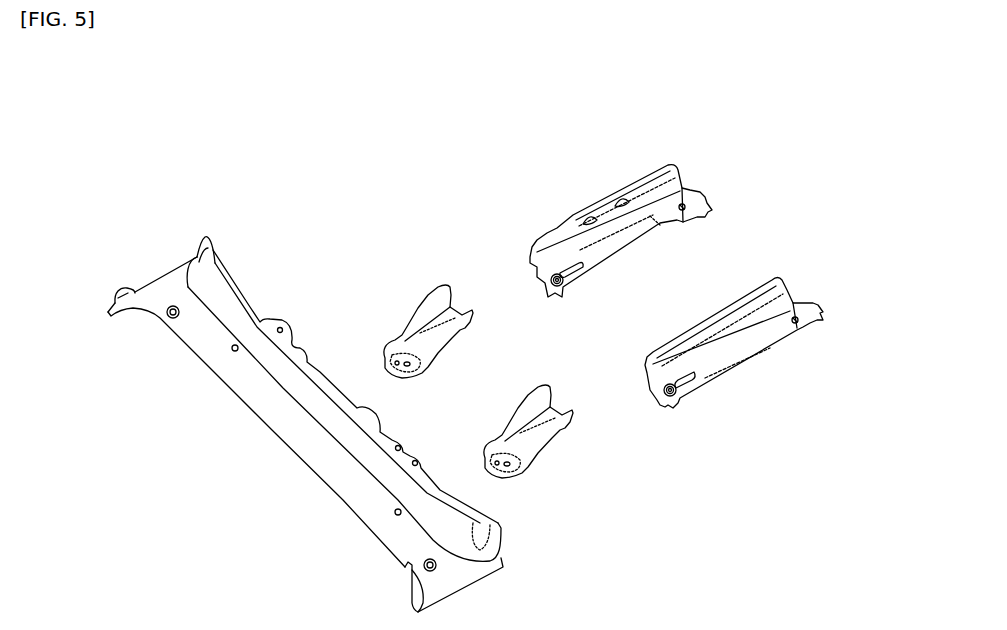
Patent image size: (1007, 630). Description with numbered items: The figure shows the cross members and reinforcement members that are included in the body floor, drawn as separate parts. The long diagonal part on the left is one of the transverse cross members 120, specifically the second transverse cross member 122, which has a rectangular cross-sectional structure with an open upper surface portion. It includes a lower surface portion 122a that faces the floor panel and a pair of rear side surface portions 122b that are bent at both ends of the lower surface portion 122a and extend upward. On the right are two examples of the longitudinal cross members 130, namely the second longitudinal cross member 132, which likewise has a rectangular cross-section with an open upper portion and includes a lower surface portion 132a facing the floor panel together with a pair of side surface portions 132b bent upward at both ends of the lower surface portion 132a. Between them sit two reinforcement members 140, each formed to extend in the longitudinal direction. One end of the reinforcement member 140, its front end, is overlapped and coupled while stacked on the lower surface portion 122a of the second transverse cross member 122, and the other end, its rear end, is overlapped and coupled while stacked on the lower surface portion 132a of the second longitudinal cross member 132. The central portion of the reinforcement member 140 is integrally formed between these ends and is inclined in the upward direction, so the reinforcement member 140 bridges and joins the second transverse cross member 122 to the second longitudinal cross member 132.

The transverse cross member 120 is at (305, 385).
The second transverse cross member 122 is at (305, 385).
The lower surface portion 122a is at (264, 397).
The rear side surface portion 122b is at (245, 328).
The longitudinal cross member 130 is at (701, 245).
The second longitudinal cross member 132 is at (701, 245).
The lower surface portion 132a is at (592, 263).
The side surface portion 132b is at (570, 247).
The reinforcement member 140 is at (478, 335).